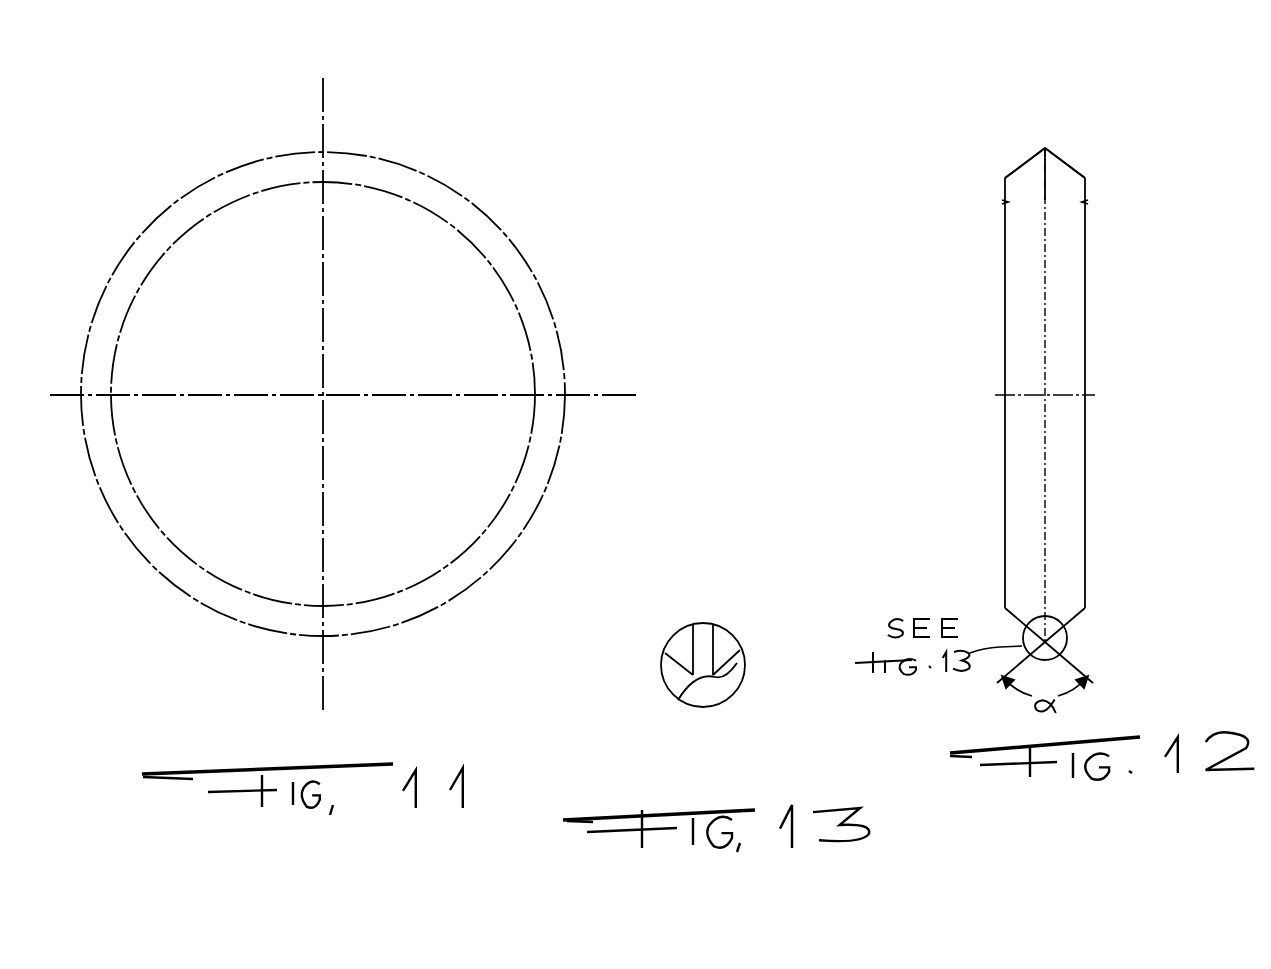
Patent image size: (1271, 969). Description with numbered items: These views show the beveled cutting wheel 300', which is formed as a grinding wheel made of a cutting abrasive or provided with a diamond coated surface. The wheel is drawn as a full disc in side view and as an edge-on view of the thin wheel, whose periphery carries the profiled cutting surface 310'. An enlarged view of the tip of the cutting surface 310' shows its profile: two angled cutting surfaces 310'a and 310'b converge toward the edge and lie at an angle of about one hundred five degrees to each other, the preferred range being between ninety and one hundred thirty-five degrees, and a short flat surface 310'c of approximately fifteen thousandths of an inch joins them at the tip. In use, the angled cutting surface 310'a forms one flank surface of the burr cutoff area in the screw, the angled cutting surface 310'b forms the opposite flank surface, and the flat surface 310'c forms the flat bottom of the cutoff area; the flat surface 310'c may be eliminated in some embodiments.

In FIG. 11, the beveled cutting wheel 300' is at (383, 394).
In FIG. 12, the beveled cutting wheel 300' is at (1002, 395).
In FIG. 11, the cutting surface 310' is at (385, 394).
In FIG. 12, the cutting surface 310' is at (989, 161).
In FIG. 12, the angled cutting surface 310'a is at (995, 130).
In FIG. 13, the angled cutting surface 310'a is at (603, 678).
In FIG. 12, the angled cutting surface 310'b is at (1126, 141).
In FIG. 13, the angled cutting surface 310'b is at (765, 698).
In FIG. 12, the flat surface 310'c is at (1080, 136).
In FIG. 13, the flat surface 310'c is at (661, 703).